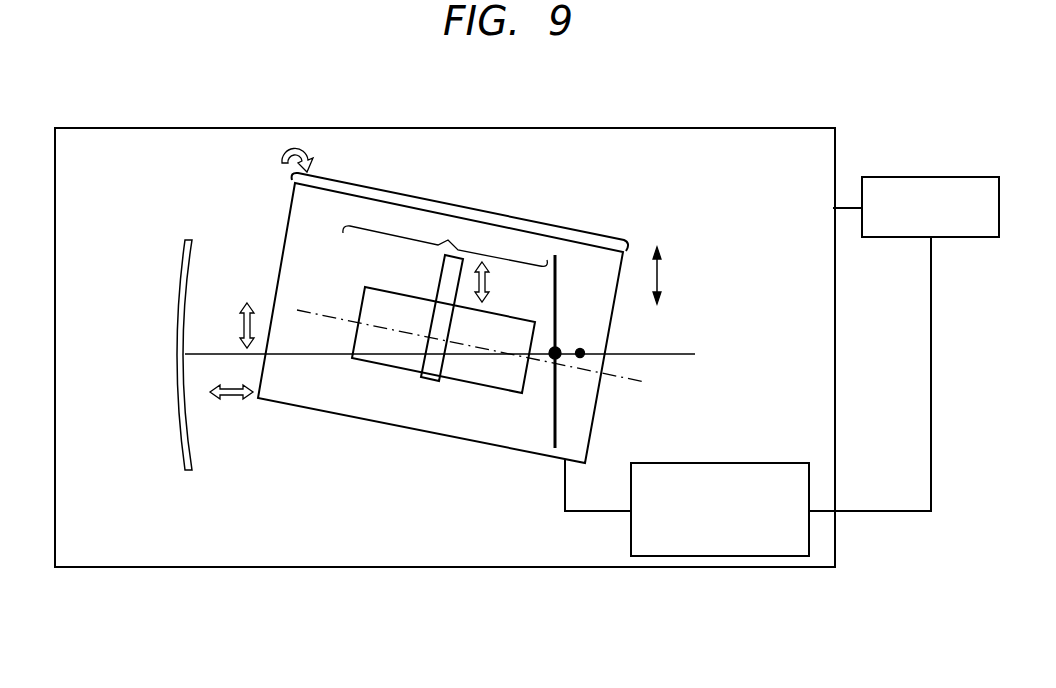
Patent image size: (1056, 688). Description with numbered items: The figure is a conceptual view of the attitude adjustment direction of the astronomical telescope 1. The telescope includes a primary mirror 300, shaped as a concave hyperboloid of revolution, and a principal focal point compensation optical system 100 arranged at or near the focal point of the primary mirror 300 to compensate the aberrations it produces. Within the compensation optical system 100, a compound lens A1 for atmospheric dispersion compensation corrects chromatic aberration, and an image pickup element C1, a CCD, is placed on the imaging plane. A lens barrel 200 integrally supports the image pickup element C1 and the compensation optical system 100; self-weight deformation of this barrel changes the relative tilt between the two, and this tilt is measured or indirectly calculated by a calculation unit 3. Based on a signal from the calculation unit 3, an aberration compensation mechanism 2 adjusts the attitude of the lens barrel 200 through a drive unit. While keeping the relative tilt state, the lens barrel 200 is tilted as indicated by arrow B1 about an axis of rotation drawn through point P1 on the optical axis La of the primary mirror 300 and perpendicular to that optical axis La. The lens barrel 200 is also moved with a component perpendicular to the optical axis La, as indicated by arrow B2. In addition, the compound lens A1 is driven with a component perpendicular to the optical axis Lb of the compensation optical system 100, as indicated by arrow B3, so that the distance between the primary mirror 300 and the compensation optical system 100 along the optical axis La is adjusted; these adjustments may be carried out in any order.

The astronomical telescope 1 is at (711, 127).
The aberration compensation mechanism 2 is at (664, 558).
The calculation unit 3 is at (953, 177).
The principal focal point compensation optical system 100 is at (449, 243).
The lens barrel 200 is at (474, 210).
The primary mirror 300 is at (180, 270).
The compound lens A1 is at (431, 383).
The arrow B1 is at (296, 145).
The arrow B2 is at (661, 275).
The arrow B3 is at (497, 288).
The optical axis La is at (305, 356).
The optical axis Lb is at (320, 311).
The point P1 is at (582, 347).
The image pickup element C1 is at (555, 423).